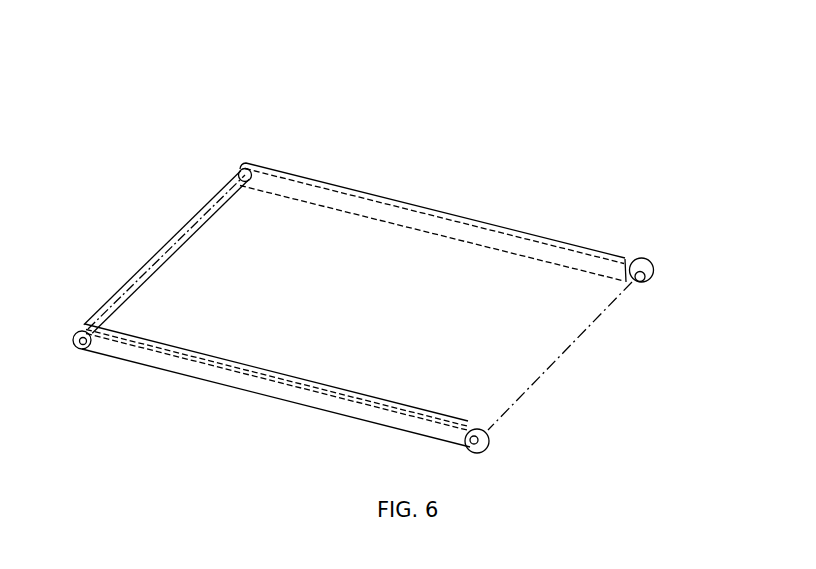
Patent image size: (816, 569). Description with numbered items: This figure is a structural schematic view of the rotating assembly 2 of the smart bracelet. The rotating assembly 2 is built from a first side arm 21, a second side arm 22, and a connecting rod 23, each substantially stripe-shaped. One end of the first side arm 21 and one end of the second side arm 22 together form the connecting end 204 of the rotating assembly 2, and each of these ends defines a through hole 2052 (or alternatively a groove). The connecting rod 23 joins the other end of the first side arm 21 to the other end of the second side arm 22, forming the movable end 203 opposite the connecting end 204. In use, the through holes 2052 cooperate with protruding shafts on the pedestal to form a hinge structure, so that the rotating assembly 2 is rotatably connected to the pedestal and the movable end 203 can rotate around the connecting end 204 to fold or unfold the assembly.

The rotating assembly 2 is at (477, 79).
The first side arm 21 is at (470, 237).
The second side arm 22 is at (260, 387).
The connecting rod 23 is at (110, 302).
The movable end 203 is at (183, 235).
The connecting end 204 is at (563, 352).
The through hole 2052 is at (653, 268).